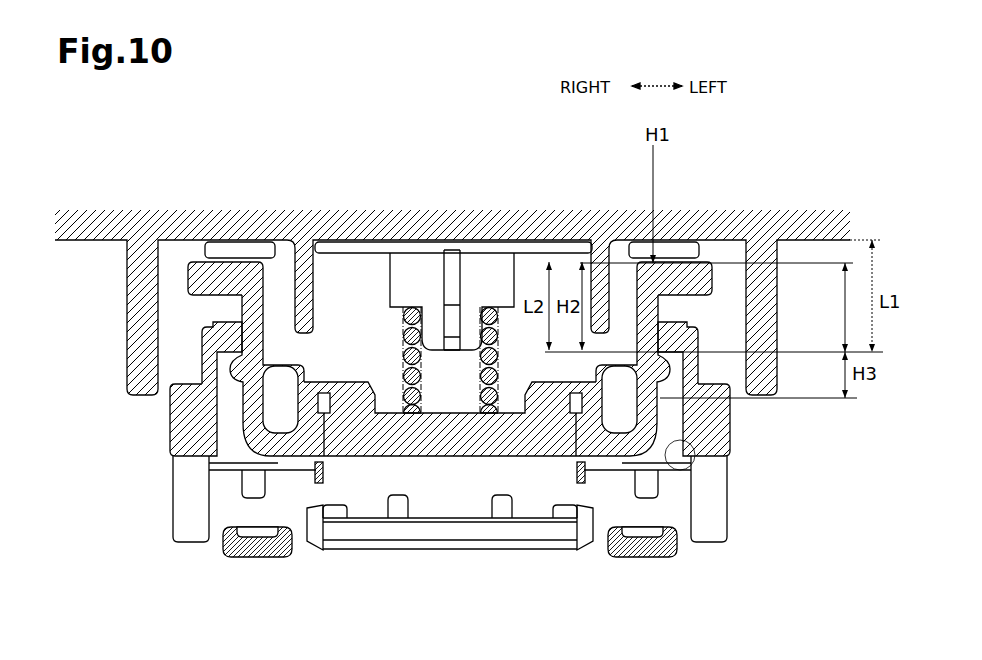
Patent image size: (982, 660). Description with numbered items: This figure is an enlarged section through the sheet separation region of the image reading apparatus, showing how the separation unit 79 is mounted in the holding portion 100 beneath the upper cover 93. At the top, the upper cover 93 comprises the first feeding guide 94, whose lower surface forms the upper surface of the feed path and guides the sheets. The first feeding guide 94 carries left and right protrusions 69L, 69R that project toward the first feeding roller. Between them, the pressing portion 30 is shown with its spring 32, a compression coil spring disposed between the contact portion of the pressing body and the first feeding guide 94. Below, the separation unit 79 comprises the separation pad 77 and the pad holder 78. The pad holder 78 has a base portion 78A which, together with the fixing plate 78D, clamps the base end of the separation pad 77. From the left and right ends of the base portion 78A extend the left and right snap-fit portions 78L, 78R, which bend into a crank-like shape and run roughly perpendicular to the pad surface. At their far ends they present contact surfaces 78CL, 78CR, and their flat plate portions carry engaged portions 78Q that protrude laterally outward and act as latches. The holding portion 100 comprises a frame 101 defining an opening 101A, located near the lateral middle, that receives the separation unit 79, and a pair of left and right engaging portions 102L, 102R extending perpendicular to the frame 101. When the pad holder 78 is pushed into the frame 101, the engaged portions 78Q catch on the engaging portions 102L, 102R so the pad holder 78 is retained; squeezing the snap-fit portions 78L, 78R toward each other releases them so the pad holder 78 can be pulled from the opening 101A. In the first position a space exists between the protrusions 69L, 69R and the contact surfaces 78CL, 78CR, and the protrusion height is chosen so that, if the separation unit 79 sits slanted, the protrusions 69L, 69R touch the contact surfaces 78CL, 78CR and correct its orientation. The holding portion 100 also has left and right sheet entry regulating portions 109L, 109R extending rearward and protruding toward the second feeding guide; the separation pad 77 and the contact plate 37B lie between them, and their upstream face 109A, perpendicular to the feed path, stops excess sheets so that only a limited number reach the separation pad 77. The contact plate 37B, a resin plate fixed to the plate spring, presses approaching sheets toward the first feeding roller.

The first feeding guide 94 is at (102, 210).
The upper cover 93 is at (463, 196).
The pressing portion 30 is at (402, 342).
The spring 32 is at (420, 376).
The pad holder 78 is at (545, 377).
The base portion 78A is at (348, 380).
The engaged portion 78Q is at (247, 358).
The right snap-fit portion 78R is at (222, 273).
The left snap-fit portion 78L is at (673, 273).
The right contact surface 78CR is at (200, 258).
The left contact surface 78CL is at (693, 263).
The right protrusion 69R is at (264, 249).
The left protrusion 69L is at (640, 248).
The frame 101 is at (187, 422).
The right engaging portion 102R is at (232, 318).
The left engaging portion 102L is at (674, 322).
The holding portion 100 is at (738, 428).
The opening 101A is at (672, 470).
The face 109A is at (190, 503).
The right sheet entry regulating portion 109R is at (188, 543).
The left sheet entry regulating portion 109L is at (712, 543).
The contact plate 37B is at (253, 555).
The separation pad 77 is at (505, 548).
The fixing plate 78D is at (477, 541).
The separation unit 79 is at (407, 557).